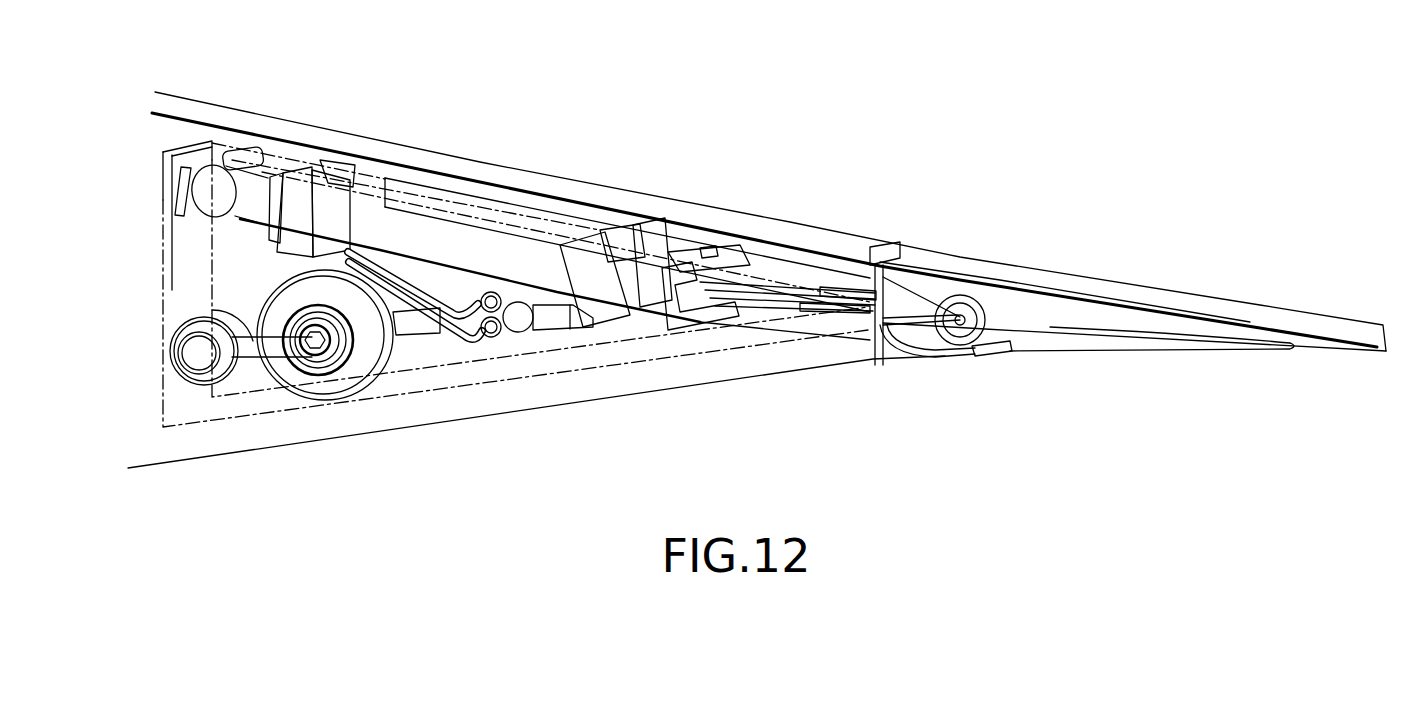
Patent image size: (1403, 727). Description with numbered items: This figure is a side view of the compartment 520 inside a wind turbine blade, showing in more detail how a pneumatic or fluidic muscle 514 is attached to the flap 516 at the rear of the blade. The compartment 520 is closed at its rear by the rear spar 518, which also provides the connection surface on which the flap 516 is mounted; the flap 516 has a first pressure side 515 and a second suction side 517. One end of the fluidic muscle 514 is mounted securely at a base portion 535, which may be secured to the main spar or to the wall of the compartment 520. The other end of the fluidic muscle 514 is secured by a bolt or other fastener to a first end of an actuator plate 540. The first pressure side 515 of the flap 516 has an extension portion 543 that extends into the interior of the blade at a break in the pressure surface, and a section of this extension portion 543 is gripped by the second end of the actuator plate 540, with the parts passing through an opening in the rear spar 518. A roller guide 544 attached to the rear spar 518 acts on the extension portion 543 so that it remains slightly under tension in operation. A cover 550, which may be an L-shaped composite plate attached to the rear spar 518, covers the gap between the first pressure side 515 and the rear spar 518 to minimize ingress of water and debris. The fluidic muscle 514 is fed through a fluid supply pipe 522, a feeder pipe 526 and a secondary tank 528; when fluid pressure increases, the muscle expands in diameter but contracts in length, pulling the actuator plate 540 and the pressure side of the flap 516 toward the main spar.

The fluidic muscle 514 is at (460, 240).
The first pressure side 515 is at (1153, 351).
The flap 516 is at (1243, 292).
The second suction side 517 is at (1122, 290).
The rear spar 518 is at (887, 257).
The compartment 520 is at (614, 168).
The fluid supply pipe 522 is at (210, 383).
The feeder pipe 526 is at (477, 338).
The secondary tank 528 is at (318, 393).
The base portion 535 is at (212, 193).
The actuator plate 540 is at (773, 300).
The extension portion 543 is at (1003, 343).
The roller guide 544 is at (962, 344).
The cover 550 is at (888, 362).